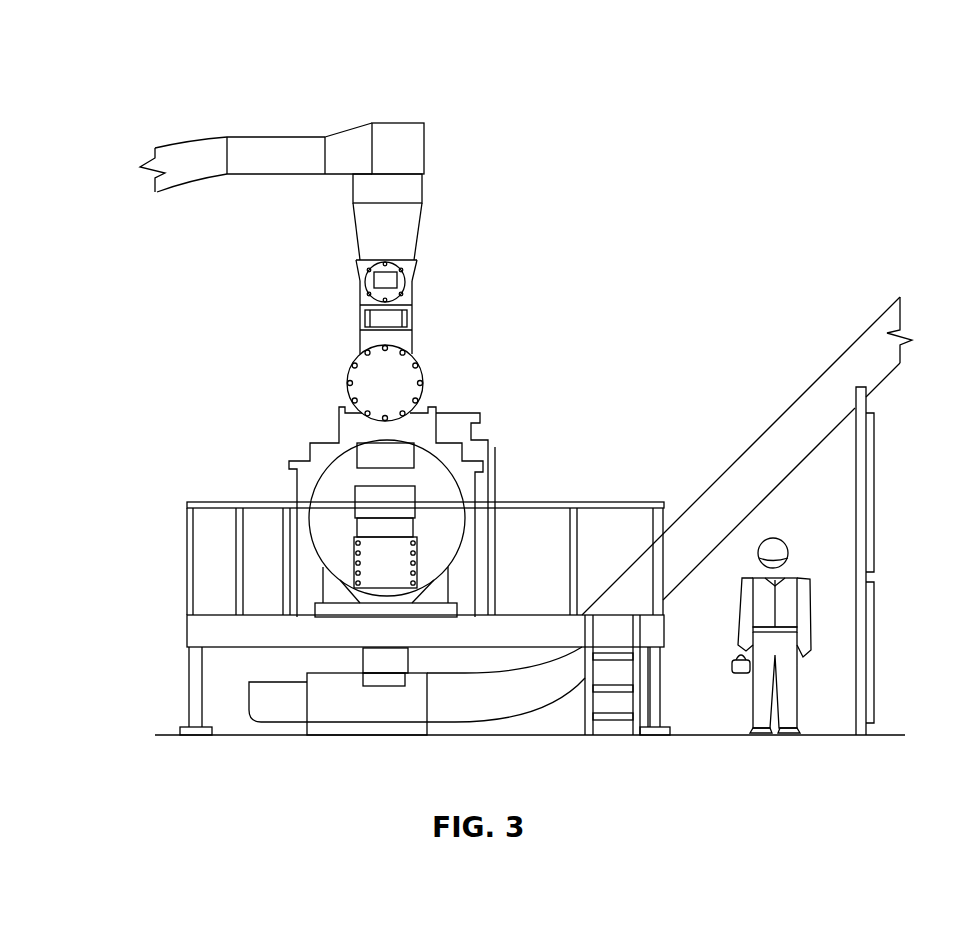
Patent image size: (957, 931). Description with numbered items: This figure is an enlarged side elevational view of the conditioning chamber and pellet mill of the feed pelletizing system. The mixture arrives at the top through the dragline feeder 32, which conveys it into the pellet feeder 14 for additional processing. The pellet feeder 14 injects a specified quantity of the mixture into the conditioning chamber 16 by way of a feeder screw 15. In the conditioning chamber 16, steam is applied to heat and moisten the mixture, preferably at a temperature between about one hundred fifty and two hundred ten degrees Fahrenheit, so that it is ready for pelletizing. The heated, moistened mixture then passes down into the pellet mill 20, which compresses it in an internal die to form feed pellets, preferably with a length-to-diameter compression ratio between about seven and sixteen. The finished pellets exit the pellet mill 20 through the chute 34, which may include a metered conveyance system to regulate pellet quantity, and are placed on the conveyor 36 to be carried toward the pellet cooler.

The pellet feeder 14 is at (389, 140).
The feeder screw 15 is at (373, 277).
The conditioning chamber 16 is at (420, 361).
The pellet mill 20 is at (317, 490).
The dragline feeder 32 is at (195, 152).
The chute 34 is at (388, 700).
The conveyor 36 is at (840, 363).